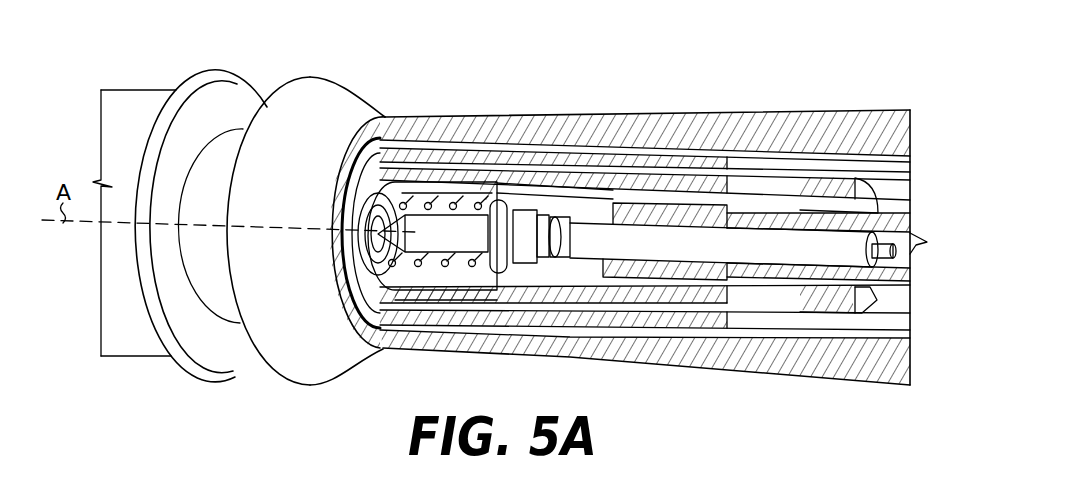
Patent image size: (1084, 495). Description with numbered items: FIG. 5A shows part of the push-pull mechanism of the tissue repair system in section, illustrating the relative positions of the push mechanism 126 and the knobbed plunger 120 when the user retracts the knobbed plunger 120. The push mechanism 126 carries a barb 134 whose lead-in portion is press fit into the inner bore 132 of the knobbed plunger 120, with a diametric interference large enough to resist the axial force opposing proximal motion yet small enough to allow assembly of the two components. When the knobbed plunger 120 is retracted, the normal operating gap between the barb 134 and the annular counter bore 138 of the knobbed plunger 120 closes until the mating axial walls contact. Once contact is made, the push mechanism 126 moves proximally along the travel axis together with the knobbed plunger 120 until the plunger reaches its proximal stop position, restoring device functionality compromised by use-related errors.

The knobbed plunger 120 is at (226, 97).
The push mechanism 126 is at (612, 235).
The annular counter bore 138 is at (730, 237).
The barb 134 is at (730, 253).
The inner bore 132 is at (895, 260).